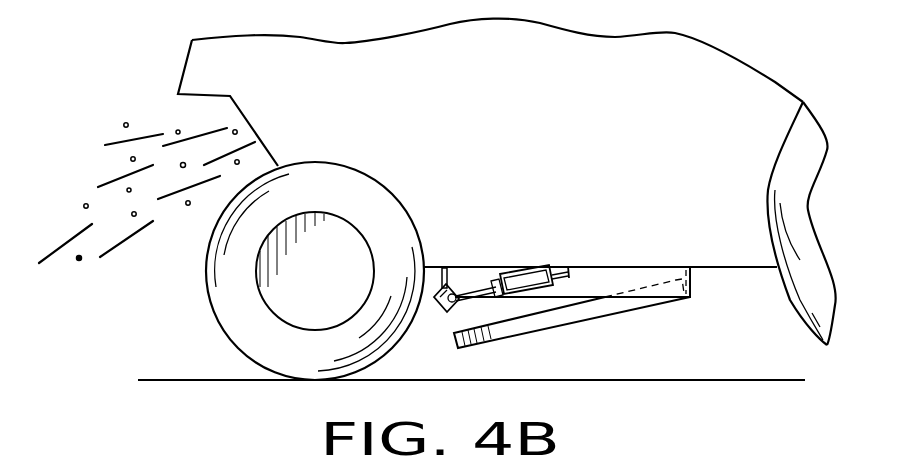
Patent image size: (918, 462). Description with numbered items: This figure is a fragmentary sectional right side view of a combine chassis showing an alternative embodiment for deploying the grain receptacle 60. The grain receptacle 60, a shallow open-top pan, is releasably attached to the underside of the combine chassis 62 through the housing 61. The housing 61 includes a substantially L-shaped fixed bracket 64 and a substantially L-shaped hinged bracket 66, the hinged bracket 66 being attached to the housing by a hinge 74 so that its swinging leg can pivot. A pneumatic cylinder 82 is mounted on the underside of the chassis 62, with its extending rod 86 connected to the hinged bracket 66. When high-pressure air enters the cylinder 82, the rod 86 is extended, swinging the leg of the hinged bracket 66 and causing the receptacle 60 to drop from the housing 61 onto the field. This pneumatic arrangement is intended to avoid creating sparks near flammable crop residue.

The grain receptacle 60 is at (552, 318).
The grain receptacle housing 61 is at (596, 277).
The combine chassis 62 is at (752, 270).
The fixed bracket 64 is at (690, 298).
The hinged bracket 66 is at (442, 296).
The hinge 74 is at (441, 283).
The pneumatic cylinder 82 is at (528, 277).
The extending rod 86 is at (480, 290).